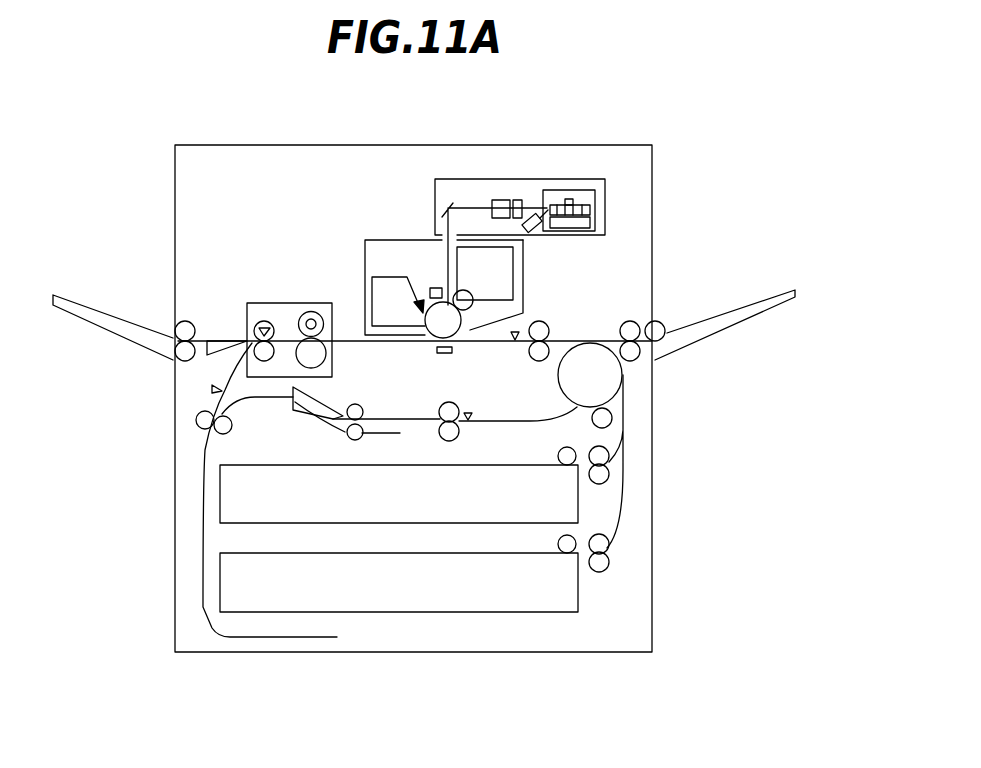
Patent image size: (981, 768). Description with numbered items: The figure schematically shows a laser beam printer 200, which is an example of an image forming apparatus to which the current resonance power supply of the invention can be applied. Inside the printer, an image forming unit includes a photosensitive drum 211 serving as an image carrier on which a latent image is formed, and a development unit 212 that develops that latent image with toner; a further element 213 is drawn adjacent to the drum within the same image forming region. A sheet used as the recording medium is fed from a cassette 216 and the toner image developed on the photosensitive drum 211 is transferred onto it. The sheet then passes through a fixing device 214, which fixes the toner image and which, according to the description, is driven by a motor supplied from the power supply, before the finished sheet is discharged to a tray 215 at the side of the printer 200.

The laser beam printer 200 is at (397, 145).
The photosensitive drum 211 is at (397, 240).
The development unit 212 is at (472, 298).
The photosensitive drum 213 is at (457, 320).
The fixing device 214 is at (287, 303).
The tray 215 is at (103, 313).
The cassette 216 is at (560, 592).